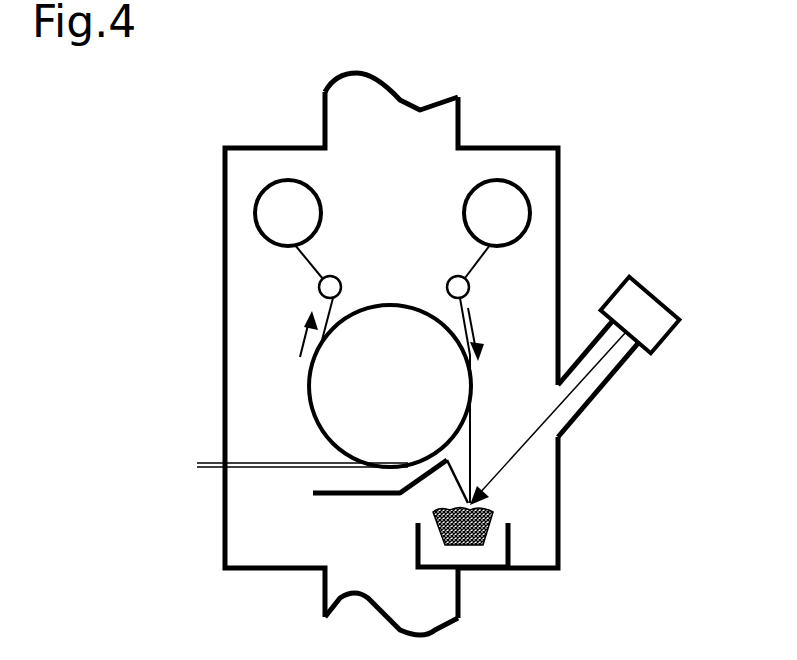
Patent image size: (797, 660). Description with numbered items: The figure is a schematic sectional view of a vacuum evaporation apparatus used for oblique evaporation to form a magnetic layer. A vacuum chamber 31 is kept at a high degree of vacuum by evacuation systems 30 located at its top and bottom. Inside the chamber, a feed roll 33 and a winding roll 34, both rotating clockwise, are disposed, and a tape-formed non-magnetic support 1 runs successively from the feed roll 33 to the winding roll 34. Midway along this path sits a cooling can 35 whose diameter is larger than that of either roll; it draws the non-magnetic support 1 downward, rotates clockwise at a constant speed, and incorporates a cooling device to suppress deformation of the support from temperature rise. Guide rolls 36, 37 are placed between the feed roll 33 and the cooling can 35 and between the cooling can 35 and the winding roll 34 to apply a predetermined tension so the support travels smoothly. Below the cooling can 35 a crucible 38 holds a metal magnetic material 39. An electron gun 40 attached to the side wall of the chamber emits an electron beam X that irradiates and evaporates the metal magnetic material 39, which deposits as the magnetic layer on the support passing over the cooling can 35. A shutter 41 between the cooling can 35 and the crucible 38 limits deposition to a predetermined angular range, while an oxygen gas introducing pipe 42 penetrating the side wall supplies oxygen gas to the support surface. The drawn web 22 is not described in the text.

The non-magnetic support 1 is at (485, 257).
The wire / fiber preform 22 is at (310, 255).
The evacuation systems 30 is at (443, 125).
The vacuum chamber 31 is at (560, 168).
The feed roll 33 is at (517, 214).
The winding roll 34 is at (268, 214).
The cooling can 35 is at (353, 373).
The guide roll 36 is at (470, 288).
The guide roll 37 is at (320, 287).
The crucible 38 is at (508, 555).
The metal magnetic material 39 is at (493, 515).
The electron gun 40 is at (675, 335).
The shutter 41 is at (343, 496).
The oxygen gas introducing pipe 42 is at (408, 467).
The electron beam X is at (565, 402).